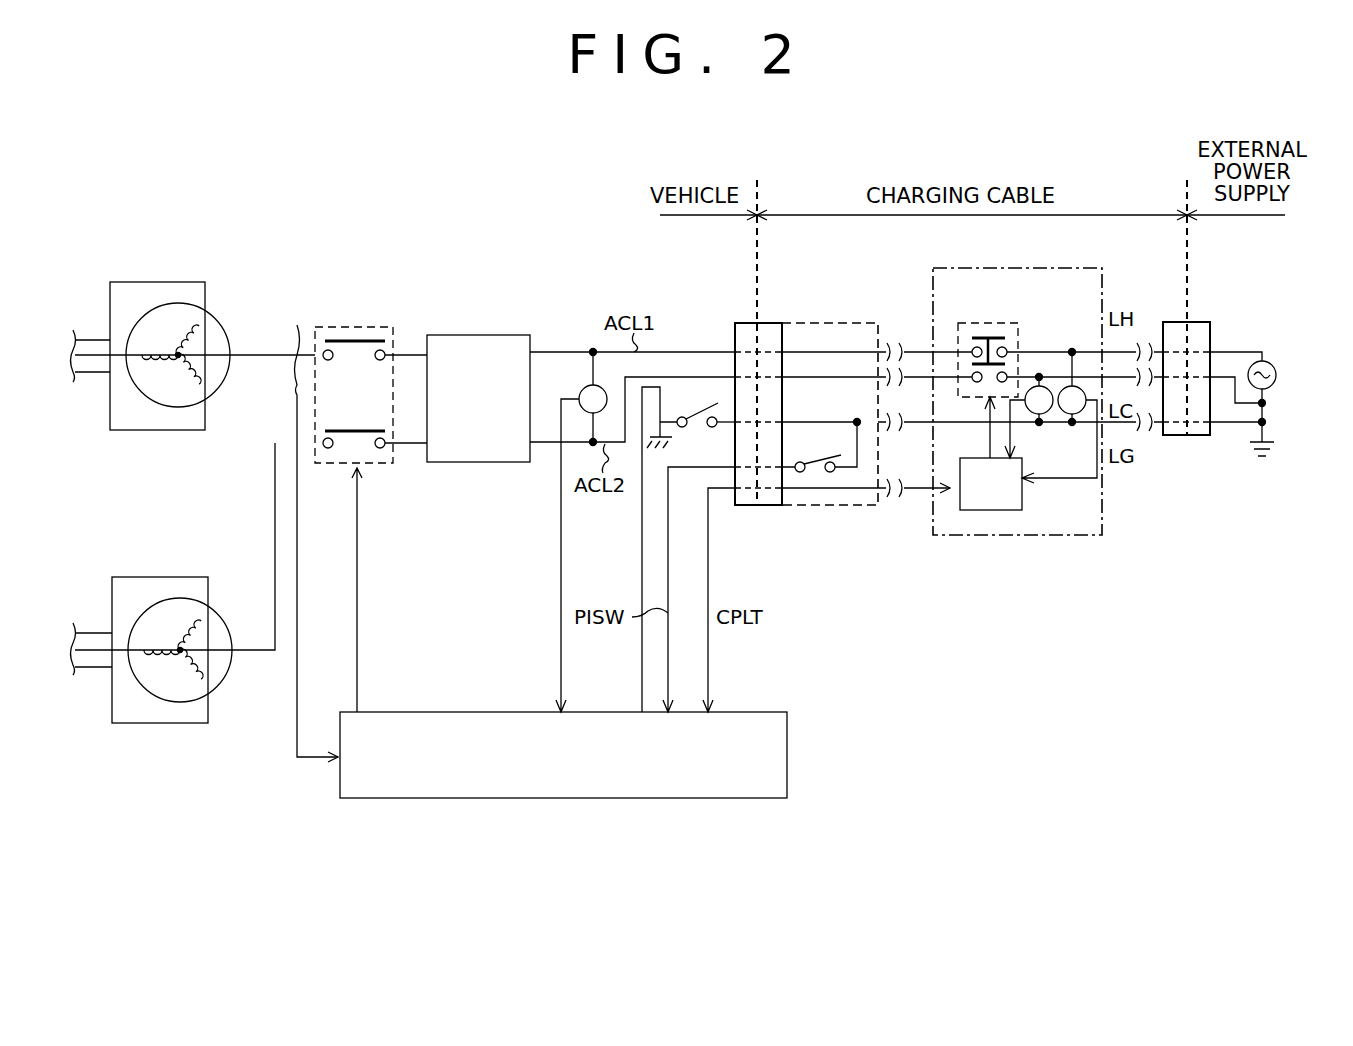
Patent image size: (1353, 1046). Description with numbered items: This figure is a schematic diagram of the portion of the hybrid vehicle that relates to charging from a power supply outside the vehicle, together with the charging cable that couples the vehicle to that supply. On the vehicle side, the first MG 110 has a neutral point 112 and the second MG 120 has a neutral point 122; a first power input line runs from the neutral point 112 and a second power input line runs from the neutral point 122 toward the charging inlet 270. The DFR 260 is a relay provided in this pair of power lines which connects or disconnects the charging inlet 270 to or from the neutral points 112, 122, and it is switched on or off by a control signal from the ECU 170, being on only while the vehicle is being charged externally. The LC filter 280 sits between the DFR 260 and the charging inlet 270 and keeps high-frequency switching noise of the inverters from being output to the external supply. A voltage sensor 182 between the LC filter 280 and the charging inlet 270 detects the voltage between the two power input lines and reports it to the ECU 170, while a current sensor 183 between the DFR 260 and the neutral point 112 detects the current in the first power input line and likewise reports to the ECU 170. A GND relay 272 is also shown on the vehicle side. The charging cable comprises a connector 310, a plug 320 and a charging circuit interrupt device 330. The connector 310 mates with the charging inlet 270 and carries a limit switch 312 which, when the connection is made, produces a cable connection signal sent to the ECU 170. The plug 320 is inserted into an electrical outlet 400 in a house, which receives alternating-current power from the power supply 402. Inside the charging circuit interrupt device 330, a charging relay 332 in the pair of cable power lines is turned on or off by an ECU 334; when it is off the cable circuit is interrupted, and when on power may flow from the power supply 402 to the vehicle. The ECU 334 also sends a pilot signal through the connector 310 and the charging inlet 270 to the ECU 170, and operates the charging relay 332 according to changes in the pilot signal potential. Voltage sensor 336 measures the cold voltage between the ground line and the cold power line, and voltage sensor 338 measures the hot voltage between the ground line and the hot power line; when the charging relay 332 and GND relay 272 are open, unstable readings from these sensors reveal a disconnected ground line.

The first MG 110 is at (205, 398).
The neutral point 112 is at (178, 355).
The second MG 120 is at (207, 693).
The neutral point 122 is at (178, 650).
The ECU 170 is at (787, 755).
The voltage sensor 182 is at (586, 388).
The current sensor 183 is at (305, 543).
The DFR 260 is at (352, 327).
The charging inlet 270 is at (732, 323).
The GND relay 272 is at (704, 391).
The LC filter 280 is at (478, 327).
The connector 310 is at (825, 414).
The limit switch 312 is at (822, 486).
The plug 320 is at (1166, 322).
The charging circuit interrupt device (CCID) 330 is at (1017, 381).
The charging relay 332 is at (989, 326).
The ECU 334 is at (1022, 498).
The voltage sensor 336 is at (1039, 377).
The voltage sensor 338 is at (1073, 350).
The electrical outlet 400 is at (1207, 322).
The power supply 402 is at (1274, 369).